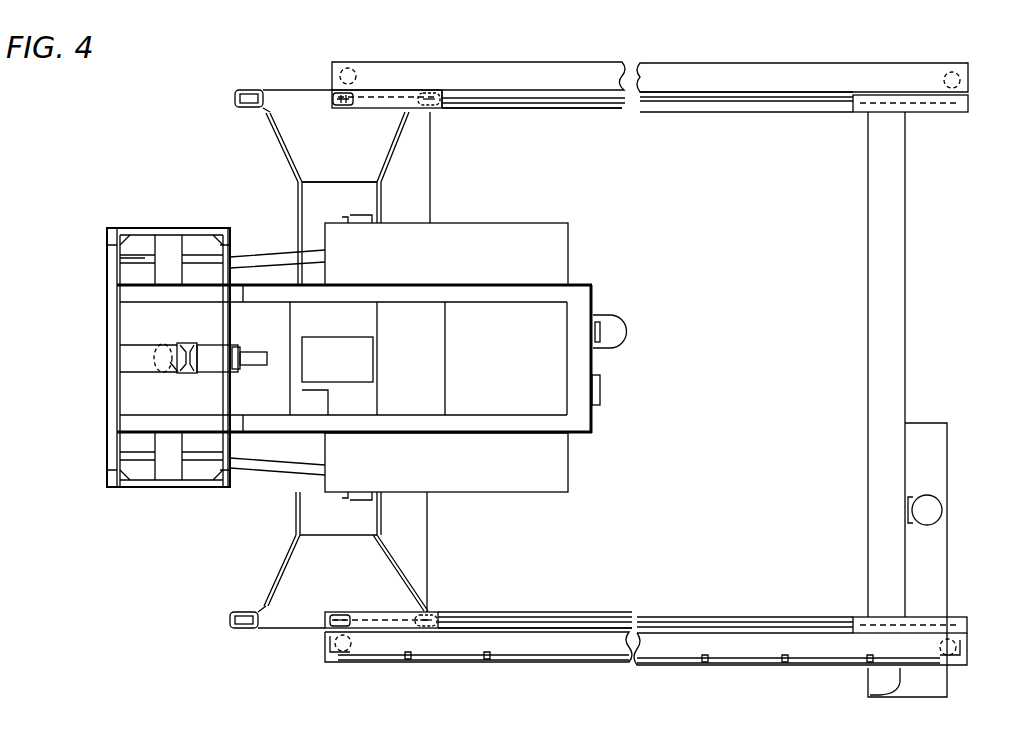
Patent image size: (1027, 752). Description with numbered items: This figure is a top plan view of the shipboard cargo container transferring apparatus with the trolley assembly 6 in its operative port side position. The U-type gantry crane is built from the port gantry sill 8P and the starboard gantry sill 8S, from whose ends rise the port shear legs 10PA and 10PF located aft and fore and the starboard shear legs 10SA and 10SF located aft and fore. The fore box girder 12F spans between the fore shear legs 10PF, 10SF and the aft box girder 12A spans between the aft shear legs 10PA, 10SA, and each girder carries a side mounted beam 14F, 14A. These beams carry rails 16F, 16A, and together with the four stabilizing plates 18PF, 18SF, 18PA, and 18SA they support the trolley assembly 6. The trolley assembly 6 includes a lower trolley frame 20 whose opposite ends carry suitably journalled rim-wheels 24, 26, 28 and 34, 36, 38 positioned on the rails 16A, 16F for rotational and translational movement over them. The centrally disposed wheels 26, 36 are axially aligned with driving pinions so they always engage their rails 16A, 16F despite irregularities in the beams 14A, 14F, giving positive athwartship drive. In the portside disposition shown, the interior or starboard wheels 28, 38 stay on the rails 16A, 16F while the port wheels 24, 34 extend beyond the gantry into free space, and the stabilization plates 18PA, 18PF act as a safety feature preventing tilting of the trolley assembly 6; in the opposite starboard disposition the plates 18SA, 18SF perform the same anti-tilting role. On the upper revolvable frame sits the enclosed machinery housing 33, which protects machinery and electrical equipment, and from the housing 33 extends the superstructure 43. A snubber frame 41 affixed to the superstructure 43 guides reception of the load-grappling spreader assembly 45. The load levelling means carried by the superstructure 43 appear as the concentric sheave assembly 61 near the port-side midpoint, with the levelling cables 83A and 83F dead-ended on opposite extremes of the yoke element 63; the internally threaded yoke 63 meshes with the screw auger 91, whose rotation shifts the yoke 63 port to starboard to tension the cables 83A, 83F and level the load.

The trolley assembly 6 is at (94, 326).
The port gantry sill 8P is at (418, 178).
The starboard gantry sill 8S is at (868, 312).
The port fore shear leg 10PF is at (369, 64).
The port aft shear leg 10PA is at (362, 666).
The starboard fore shear leg 10SF is at (976, 55).
The starboard aft shear leg 10SA is at (938, 647).
The fore box girder 12F is at (594, 70).
The aft box girder 12A is at (517, 658).
The fore side mounted beam 14F is at (617, 110).
The aft side mounted beam 14A is at (612, 618).
The fore rail 16F is at (558, 100).
The aft rail 16A is at (553, 616).
The port fore stabilizing plate 18PF is at (390, 100).
The port aft stabilizing plate 18PA is at (370, 614).
The starboard fore stabilizing plate 18SF is at (898, 100).
The starboard aft stabilizing plate 18SA is at (858, 617).
The lower trolley frame 20 is at (315, 201).
The port rim-wheel 24 is at (245, 629).
The centrally disposed rim-wheel 26 is at (336, 614).
The starboard rim-wheel 28 is at (441, 614).
The machinery housing 33 is at (541, 222).
The port rim-wheel 34 is at (250, 108).
The centrally disposed rim-wheel 36 is at (342, 109).
The starboard rim-wheel 38 is at (441, 109).
The snubber frame 41 is at (120, 228).
The superstructure 43 is at (270, 408).
The load-grappling spreader assembly 45 is at (125, 266).
The concentric sheave assembly 61 is at (155, 354).
The yoke element 63 is at (197, 376).
The aft levelling cable 83A is at (182, 347).
The fore levelling cable 83F is at (178, 372).
The screw auger 91 is at (215, 349).